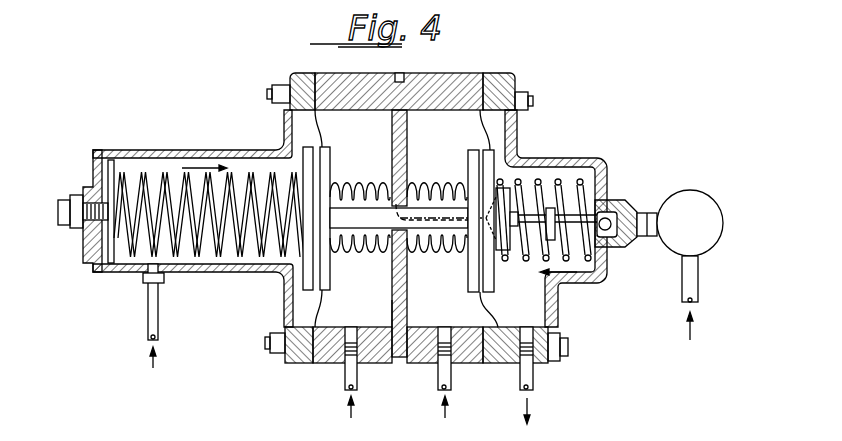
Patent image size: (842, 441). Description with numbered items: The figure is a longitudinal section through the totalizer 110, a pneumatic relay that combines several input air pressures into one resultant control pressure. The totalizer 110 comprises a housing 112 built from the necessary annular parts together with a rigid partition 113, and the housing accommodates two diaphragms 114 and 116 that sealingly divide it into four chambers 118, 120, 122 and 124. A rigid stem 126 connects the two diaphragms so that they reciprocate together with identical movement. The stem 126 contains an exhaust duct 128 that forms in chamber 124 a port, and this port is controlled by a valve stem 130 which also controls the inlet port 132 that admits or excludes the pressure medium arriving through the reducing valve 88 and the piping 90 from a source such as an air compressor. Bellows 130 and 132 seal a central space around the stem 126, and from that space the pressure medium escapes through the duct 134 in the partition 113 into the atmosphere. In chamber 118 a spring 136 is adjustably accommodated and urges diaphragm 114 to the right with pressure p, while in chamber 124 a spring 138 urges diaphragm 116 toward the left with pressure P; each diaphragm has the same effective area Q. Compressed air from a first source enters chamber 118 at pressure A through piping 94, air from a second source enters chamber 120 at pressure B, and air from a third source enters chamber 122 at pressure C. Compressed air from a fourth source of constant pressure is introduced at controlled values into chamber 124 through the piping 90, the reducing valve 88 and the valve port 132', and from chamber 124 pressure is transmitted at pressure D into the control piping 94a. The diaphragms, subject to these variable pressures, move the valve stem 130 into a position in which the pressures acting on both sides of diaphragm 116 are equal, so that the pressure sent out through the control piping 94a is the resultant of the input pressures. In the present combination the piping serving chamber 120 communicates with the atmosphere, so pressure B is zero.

The reducing valve 88 is at (699, 193).
The piping 90 is at (700, 277).
The piping 94 is at (160, 323).
The control piping 94a is at (531, 381).
The totalizer 110 is at (248, 125).
The housing 112 is at (470, 73).
The rigid partition 113 is at (390, 312).
The diaphragm 114 is at (313, 305).
The diaphragm 116 is at (490, 128).
The chamber 118 is at (232, 268).
The chamber 120 is at (335, 318).
The chamber 122 is at (435, 316).
The chamber 124 is at (535, 300).
The rigid stem 126 is at (356, 208).
The exhaust duct 128 is at (443, 214).
The valve stem 130 is at (360, 250).
The inlet port 132 is at (437, 263).
The valve port 132' is at (626, 205).
The duct 134 is at (400, 76).
The spring 136 is at (143, 177).
The spring 138 is at (560, 184).